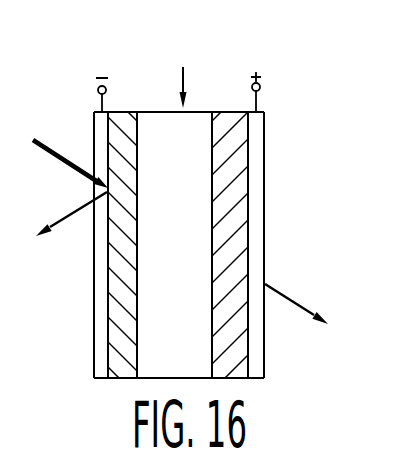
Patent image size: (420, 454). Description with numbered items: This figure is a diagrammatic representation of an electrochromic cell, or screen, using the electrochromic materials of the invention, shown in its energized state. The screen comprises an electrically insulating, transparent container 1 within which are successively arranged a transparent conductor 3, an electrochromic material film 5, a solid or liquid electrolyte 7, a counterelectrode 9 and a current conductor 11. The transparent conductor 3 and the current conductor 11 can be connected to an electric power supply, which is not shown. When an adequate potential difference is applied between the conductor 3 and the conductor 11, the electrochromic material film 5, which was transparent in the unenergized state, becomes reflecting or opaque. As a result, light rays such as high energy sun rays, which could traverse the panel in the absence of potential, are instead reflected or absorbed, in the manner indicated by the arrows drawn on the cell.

The transparent container 1 is at (180, 71).
The transparent conductor 3 is at (98, 139).
The electrochromic material film 5 is at (121, 231).
The electrolyte 7 is at (155, 322).
The counterelectrode 9 is at (235, 146).
The current conductor 11 is at (255, 190).